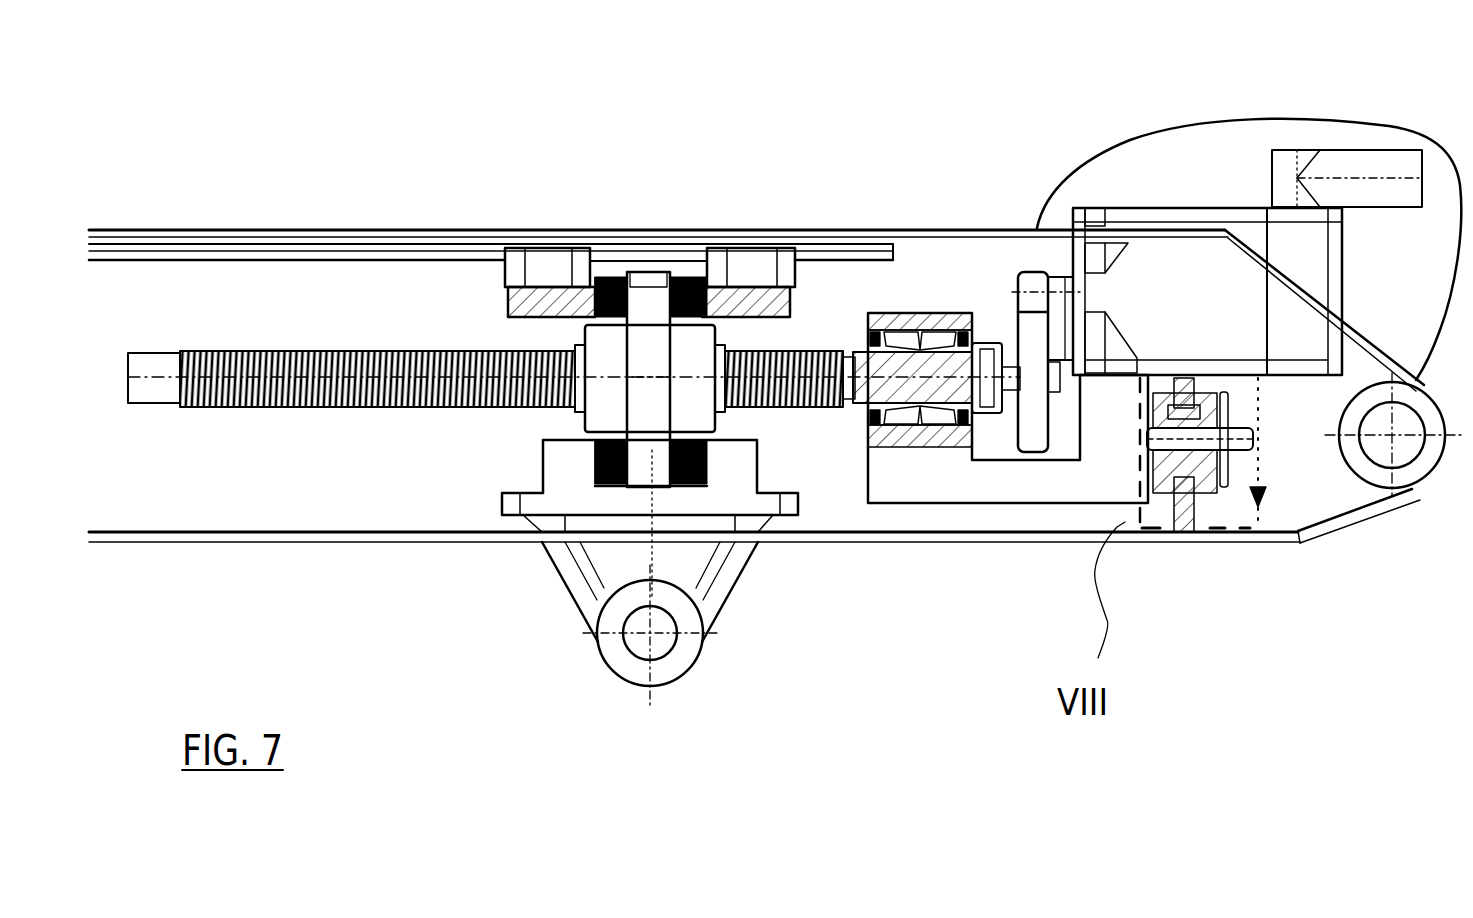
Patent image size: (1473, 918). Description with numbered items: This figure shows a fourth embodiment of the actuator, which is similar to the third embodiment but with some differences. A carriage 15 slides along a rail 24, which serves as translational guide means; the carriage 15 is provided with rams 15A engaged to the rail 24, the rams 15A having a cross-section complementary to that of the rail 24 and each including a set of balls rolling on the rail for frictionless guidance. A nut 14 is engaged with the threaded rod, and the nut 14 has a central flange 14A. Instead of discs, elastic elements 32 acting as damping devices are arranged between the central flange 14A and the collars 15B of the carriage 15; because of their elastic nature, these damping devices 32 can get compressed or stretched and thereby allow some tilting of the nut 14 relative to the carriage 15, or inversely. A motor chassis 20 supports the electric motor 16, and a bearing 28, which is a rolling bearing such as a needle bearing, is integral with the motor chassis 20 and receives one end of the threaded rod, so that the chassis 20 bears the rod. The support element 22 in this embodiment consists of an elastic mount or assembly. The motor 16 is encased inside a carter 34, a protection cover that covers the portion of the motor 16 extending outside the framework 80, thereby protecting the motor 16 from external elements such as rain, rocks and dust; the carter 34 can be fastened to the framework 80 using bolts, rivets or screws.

The nut 14 is at (613, 423).
The central flange 14A is at (597, 635).
The carriage 15 is at (688, 553).
The rams 15A is at (545, 260).
The collars 15B is at (733, 457).
The electric motor 16 is at (1177, 330).
The motor chassis 20 is at (1008, 408).
The support element 22 is at (1265, 505).
The rail 24 is at (240, 243).
The bearing 28 is at (935, 291).
The elastic elements 32 is at (687, 277).
The carter 34 is at (1249, 249).
The framework 80 is at (491, 429).